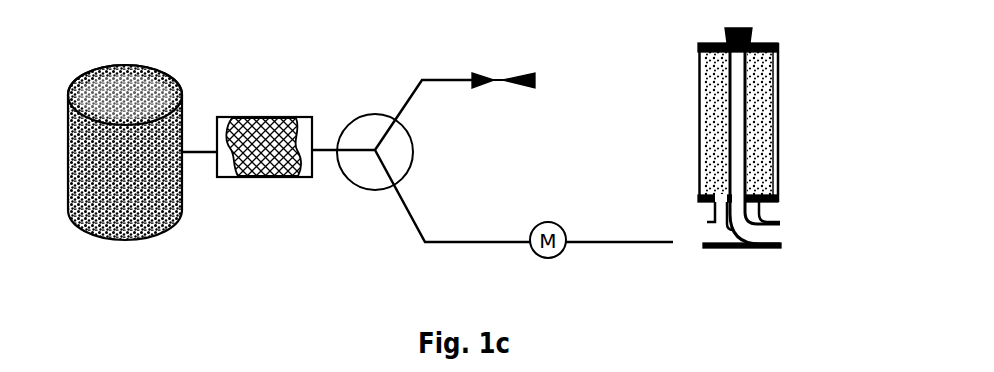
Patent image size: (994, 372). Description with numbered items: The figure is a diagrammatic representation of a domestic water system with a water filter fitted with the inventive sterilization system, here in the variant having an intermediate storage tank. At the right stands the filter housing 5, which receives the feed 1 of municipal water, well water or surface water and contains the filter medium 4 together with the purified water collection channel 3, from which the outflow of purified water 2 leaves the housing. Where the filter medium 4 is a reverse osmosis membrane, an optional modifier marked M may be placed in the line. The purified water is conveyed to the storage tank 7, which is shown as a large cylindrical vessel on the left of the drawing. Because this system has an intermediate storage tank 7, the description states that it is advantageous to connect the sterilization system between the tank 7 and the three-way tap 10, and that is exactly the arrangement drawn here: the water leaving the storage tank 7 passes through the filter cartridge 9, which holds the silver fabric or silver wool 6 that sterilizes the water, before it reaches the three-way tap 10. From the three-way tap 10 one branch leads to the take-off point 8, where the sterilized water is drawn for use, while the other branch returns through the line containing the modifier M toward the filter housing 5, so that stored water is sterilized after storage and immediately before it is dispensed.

The feed 1 is at (780, 230).
The outflow purified water 2 is at (727, 230).
The purified water collection channel 3 is at (736, 127).
The filter medium 4 is at (738, 123).
The filter housing 5 is at (729, 37).
The silver fabric or silver wool 6 is at (264, 147).
The storage tank 7 is at (125, 152).
The take-off point 8 is at (521, 80).
The filter cartridge 9 is at (318, 115).
The three-way tap 10 is at (421, 161).